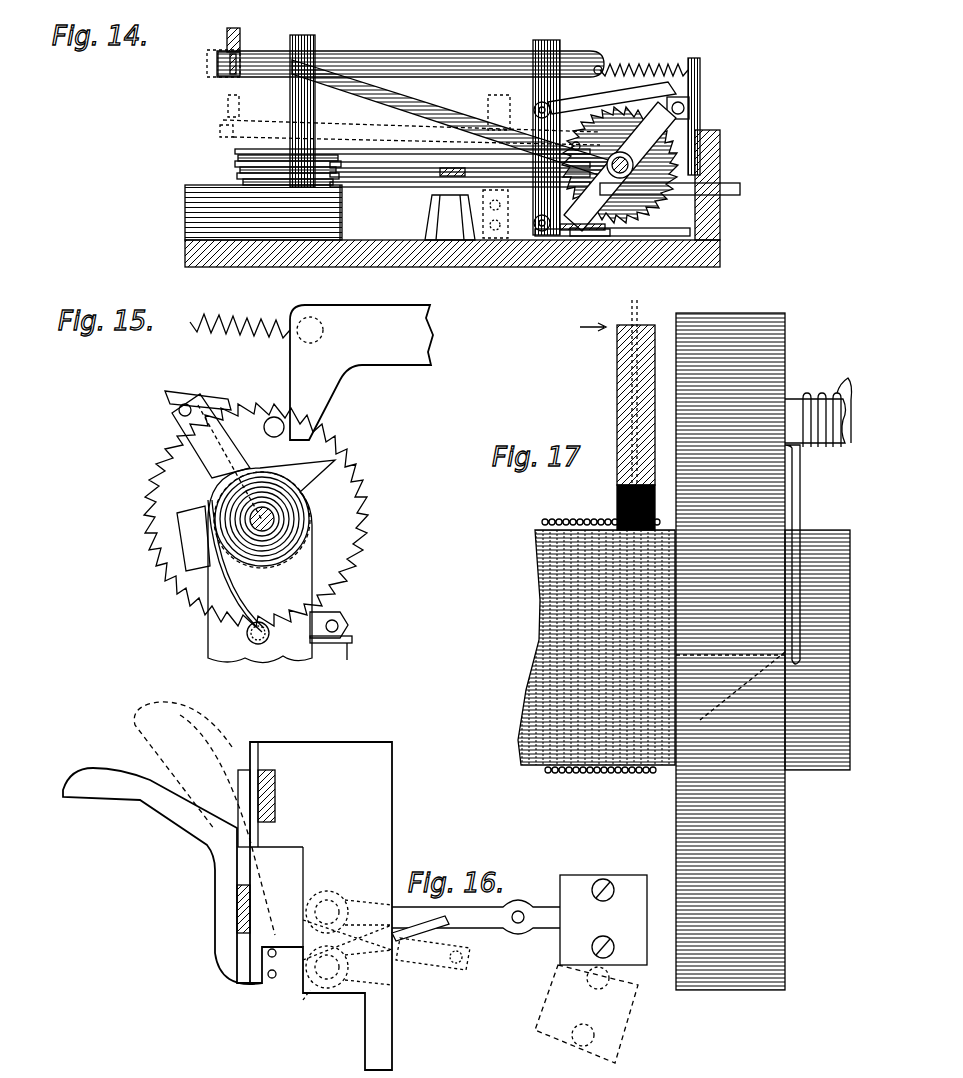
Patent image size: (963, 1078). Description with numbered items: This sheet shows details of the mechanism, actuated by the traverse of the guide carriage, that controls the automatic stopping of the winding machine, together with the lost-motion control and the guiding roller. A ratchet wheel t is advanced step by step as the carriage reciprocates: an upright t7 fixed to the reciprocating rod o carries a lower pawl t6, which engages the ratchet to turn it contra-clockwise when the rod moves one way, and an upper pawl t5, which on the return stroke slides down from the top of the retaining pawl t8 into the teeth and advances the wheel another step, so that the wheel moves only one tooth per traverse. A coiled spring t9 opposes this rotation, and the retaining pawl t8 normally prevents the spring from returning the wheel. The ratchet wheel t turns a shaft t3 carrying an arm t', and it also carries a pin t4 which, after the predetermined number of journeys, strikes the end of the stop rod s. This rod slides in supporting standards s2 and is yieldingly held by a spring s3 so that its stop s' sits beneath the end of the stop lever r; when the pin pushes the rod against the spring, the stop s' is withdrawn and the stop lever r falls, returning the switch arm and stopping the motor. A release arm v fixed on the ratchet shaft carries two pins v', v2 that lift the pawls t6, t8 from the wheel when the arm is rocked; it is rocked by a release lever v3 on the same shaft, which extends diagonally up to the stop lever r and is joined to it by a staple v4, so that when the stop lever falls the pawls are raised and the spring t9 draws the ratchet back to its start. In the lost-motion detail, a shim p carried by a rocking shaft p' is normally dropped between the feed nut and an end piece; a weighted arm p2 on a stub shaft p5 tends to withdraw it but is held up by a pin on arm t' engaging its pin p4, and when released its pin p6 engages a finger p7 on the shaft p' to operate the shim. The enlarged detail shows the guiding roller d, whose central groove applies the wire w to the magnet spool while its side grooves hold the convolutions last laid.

In FIG. 14, the stop lever r is at (241, 40).
In FIG. 14, the stop rod s is at (410, 48).
In FIG. 15, the stop rod s is at (361, 372).
In FIG. 14, the stop s' is at (204, 63).
In FIG. 14, the supporting standards s2 is at (312, 42).
In FIG. 15, the spring s3 is at (240, 340).
In FIG. 14, the ratchet wheel t is at (620, 167).
In FIG. 15, the ratchet wheel t is at (275, 515).
In FIG. 14, the arm t' is at (519, 88).
In FIG. 14, the shaft t3 is at (640, 163).
In FIG. 14, the pin t4 is at (628, 68).
In FIG. 15, the pin t4 is at (264, 428).
In FIG. 14, the pawl t5 is at (700, 96).
In FIG. 14, the pawl t6 is at (605, 236).
In FIG. 15, the pawl t6 is at (338, 658).
In FIG. 14, the upright t7 is at (530, 208).
In FIG. 14, the retaining pawl t8 is at (690, 106).
In FIG. 15, the retaining pawl t8 is at (205, 398).
In FIG. 15, the coiled spring t9 is at (300, 535).
In FIG. 14, the release arm v is at (411, 117).
In FIG. 15, the release arm v is at (255, 528).
In FIG. 14, the pin v' is at (632, 104).
In FIG. 15, the pin v' is at (154, 407).
In FIG. 14, the pin v2 is at (575, 240).
In FIG. 15, the pin v2 is at (348, 626).
In FIG. 14, the release lever v3 is at (450, 119).
In FIG. 14, the staple v4 is at (230, 74).
In FIG. 14, the reciprocating rod o is at (740, 190).
In FIG. 17, the guiding roller d is at (615, 400).
In FIG. 17, the wire w is at (550, 518).
In FIG. 17, the block b is at (536, 555).
In FIG. 16, the shim p is at (162, 876).
In FIG. 16, the rocking shaft p' is at (300, 1013).
In FIG. 16, the weighted arm p2 is at (492, 928).
In FIG. 16, the pin p4 is at (530, 905).
In FIG. 16, the stub shaft p5 is at (330, 903).
In FIG. 16, the pin p6 is at (516, 910).
In FIG. 16, the finger p7 is at (422, 935).